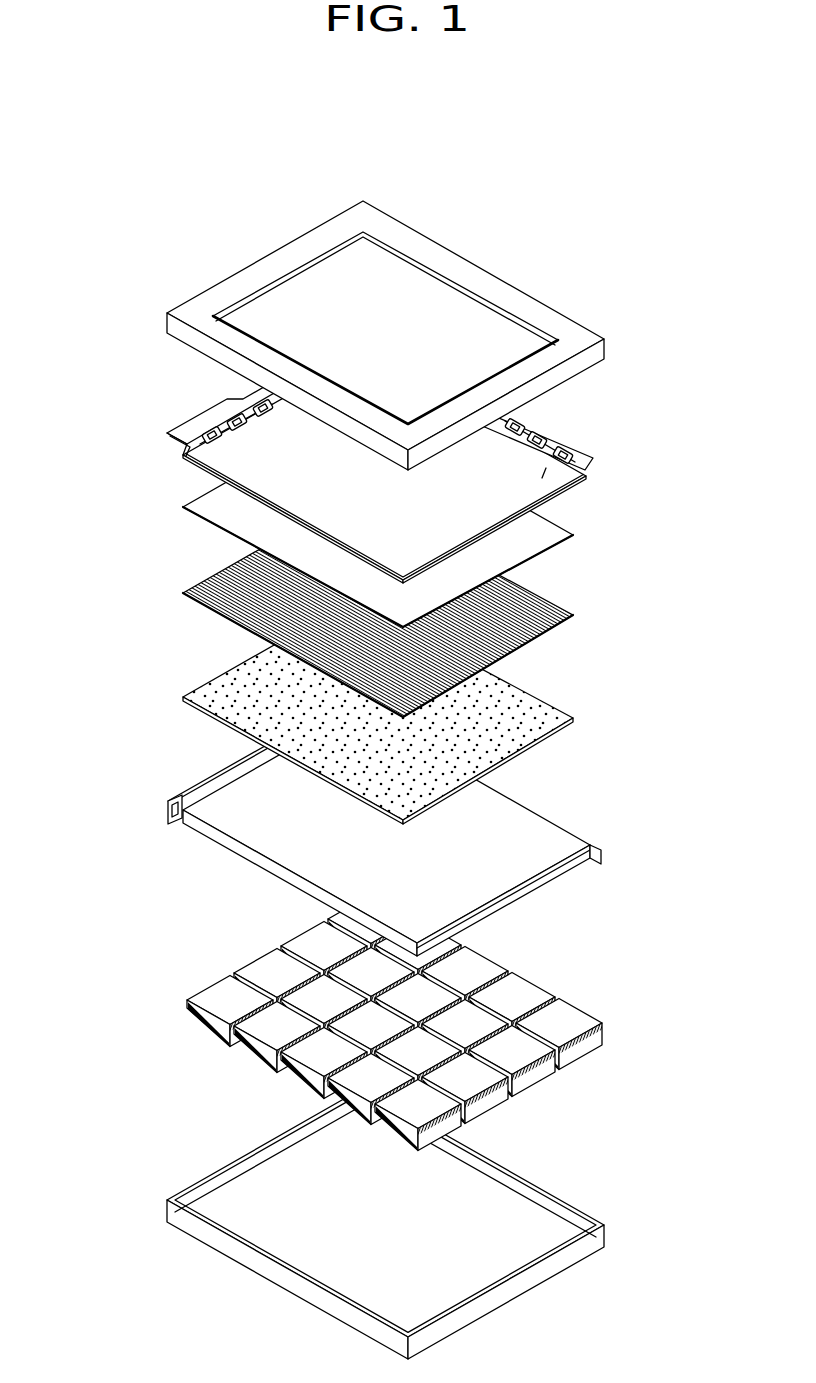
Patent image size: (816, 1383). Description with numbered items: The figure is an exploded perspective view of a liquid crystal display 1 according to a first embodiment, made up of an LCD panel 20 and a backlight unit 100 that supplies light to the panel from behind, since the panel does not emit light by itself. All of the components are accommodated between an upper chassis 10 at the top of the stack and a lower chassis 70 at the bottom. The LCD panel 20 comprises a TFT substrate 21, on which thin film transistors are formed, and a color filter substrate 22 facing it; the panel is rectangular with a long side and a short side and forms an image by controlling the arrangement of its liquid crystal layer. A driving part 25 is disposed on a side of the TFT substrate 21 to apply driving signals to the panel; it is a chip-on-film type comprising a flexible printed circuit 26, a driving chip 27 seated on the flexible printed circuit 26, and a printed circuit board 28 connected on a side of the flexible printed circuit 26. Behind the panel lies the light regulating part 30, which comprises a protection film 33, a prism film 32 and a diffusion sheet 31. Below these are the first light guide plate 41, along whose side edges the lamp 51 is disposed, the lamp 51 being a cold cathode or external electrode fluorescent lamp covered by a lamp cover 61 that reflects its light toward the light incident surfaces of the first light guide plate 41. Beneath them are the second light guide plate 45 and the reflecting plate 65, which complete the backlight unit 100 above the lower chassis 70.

The liquid crystal display 1 is at (97, 225).
The upper chassis 10 is at (607, 346).
The LCD panel 20 is at (656, 430).
The TFT substrate 21 is at (588, 478).
The color filter substrate 22 is at (590, 452).
The driving part 25 is at (78, 388).
The flexible printed circuit 26 is at (188, 453).
The driving chip 27 is at (198, 436).
The printed circuit board 28 is at (206, 408).
The light regulating part 30 is at (663, 528).
The diffusion sheet 31 is at (575, 719).
The prism film 32 is at (575, 616).
The protection film 33 is at (575, 533).
The first light guide plate 41 is at (591, 840).
The second light guide plate 45 is at (577, 1015).
The lamp 51 is at (176, 822).
The lamp cover 61 is at (168, 805).
The reflecting plate 65 is at (228, 1045).
The lower chassis 70 is at (606, 1229).
The backlight unit 100 is at (711, 628).